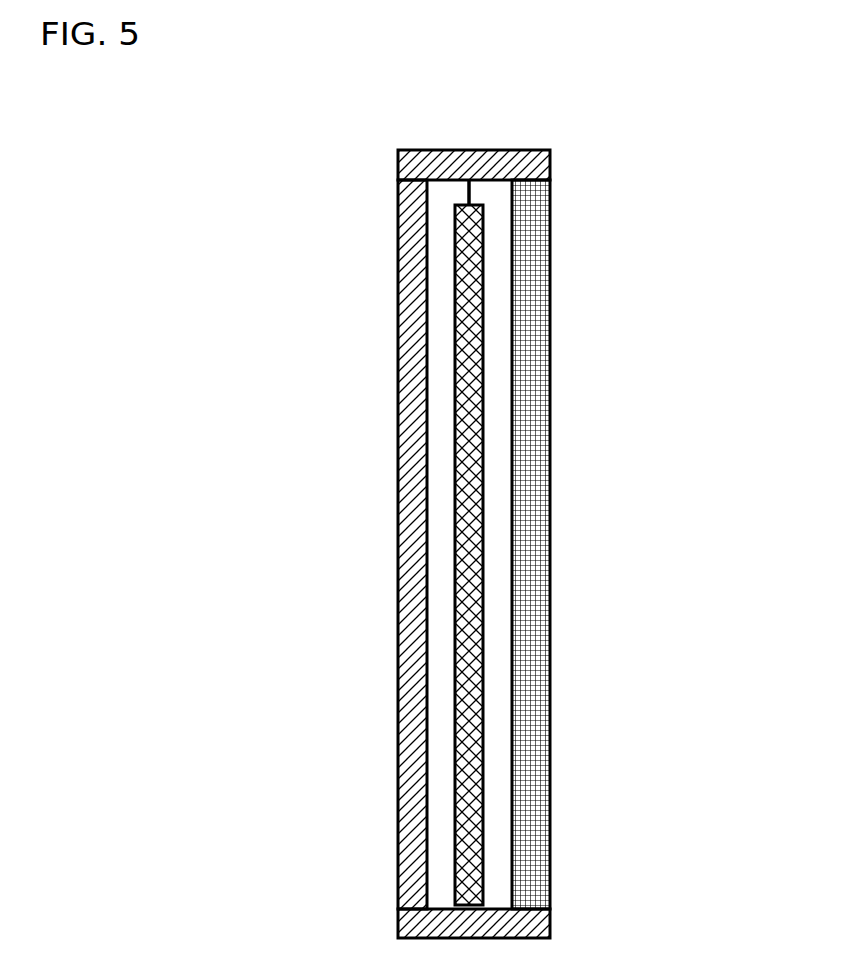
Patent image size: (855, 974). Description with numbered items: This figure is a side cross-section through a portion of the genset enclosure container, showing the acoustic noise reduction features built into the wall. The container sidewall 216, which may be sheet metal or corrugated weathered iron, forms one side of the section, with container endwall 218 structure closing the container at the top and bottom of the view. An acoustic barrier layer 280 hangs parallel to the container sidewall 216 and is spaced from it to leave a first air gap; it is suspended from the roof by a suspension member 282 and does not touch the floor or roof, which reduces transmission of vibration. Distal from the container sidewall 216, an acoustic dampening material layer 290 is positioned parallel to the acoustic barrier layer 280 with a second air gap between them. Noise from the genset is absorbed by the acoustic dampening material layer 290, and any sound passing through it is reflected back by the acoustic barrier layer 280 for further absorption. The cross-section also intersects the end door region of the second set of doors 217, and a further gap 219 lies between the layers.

The container sidewall 216 is at (398, 452).
The second set of doors 217 is at (445, 520).
The container endwall 218 is at (448, 150).
The second channel 219 is at (502, 600).
The acoustic barrier layer 280 is at (478, 617).
The suspension member 282 is at (469, 183).
The acoustic dampening material layer 290 is at (530, 543).